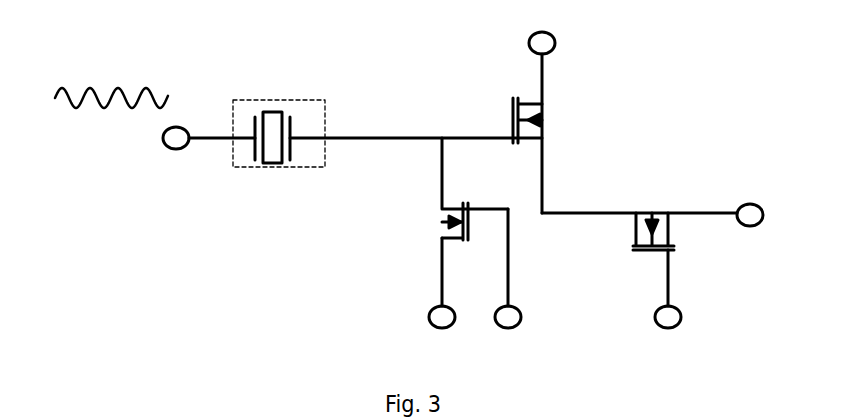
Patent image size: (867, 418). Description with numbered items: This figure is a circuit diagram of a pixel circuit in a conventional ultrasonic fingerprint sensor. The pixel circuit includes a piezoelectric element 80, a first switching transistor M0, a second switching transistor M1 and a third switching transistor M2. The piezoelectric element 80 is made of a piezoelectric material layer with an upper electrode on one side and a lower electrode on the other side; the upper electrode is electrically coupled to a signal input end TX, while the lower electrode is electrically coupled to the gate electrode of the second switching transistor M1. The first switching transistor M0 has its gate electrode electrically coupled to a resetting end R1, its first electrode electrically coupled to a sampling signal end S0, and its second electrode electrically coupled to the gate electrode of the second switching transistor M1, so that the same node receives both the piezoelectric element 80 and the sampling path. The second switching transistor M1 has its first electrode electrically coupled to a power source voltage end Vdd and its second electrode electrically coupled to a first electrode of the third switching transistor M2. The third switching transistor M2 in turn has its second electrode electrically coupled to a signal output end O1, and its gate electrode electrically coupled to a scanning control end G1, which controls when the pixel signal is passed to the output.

The piezoelectric element 80 is at (285, 100).
The signal input end TX is at (122, 120).
The power source voltage end Vdd is at (537, 107).
The second switching transistor M1 is at (504, 117).
The first switching transistor M0 is at (448, 189).
The third switching transistor M2 is at (650, 216).
The sampling signal end S0 is at (441, 299).
The resetting end R1 is at (508, 285).
The signal output end O1 is at (653, 200).
The scanning control end G1 is at (667, 307).